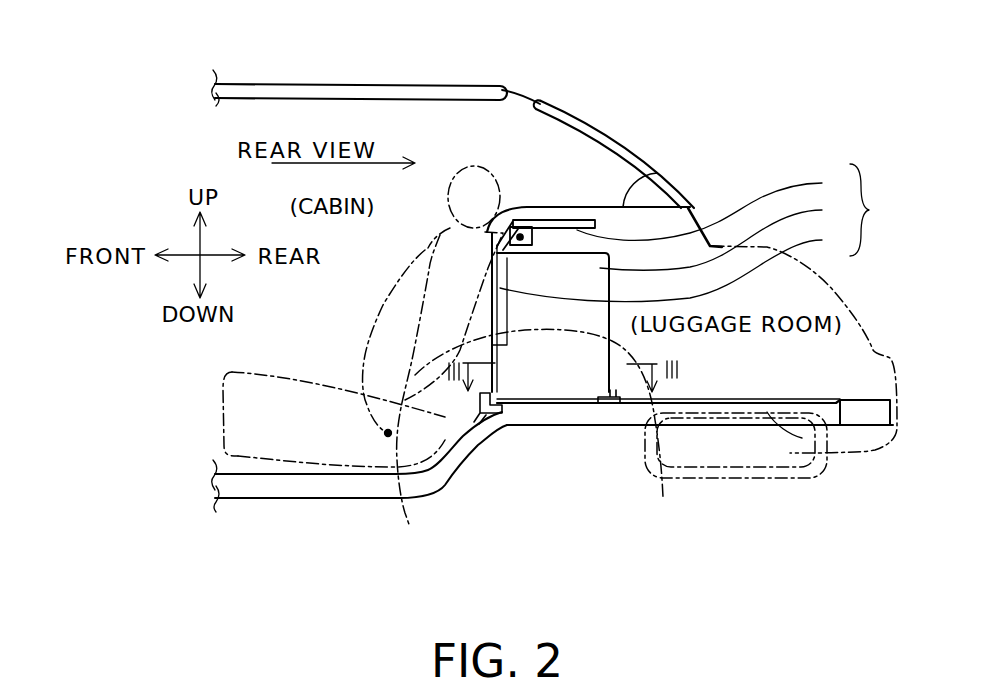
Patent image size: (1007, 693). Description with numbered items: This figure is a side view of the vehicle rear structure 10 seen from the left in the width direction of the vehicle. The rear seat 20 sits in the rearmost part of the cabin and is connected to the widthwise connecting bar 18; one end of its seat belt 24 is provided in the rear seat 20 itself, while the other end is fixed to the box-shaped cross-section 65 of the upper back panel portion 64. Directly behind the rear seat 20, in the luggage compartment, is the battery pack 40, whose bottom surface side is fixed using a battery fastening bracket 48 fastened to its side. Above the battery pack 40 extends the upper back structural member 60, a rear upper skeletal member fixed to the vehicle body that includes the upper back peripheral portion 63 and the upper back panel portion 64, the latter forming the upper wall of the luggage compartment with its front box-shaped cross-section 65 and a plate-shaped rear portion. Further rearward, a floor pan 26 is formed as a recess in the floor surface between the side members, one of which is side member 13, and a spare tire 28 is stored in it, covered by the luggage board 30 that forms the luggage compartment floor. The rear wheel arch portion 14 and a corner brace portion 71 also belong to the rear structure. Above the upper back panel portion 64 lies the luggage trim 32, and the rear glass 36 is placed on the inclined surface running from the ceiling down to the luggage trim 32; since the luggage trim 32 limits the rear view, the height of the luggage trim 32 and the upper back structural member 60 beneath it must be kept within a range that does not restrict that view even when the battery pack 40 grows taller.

The vehicle rear structure 10 is at (731, 65).
The side member 13 is at (467, 452).
The rear wheel arch portion 14 is at (405, 514).
The widthwise connecting bar 18 is at (496, 414).
The rear seat 20 is at (254, 417).
The seat belt 24 is at (383, 308).
The floor pan 26 is at (767, 410).
The spare tire 28 is at (770, 450).
The luggage board 30 is at (805, 398).
The luggage trim 32 is at (660, 172).
The rear glass 36 is at (587, 128).
The battery pack 40 is at (537, 381).
The battery fastening bracket 48 is at (616, 404).
The upper back structural member 60 is at (878, 210).
The upper back peripheral portion 63 is at (677, 264).
The upper back panel portion 64 is at (410, 85).
The box-shaped cross-section 65 is at (727, 234).
The corner brace portion 71 is at (497, 239).